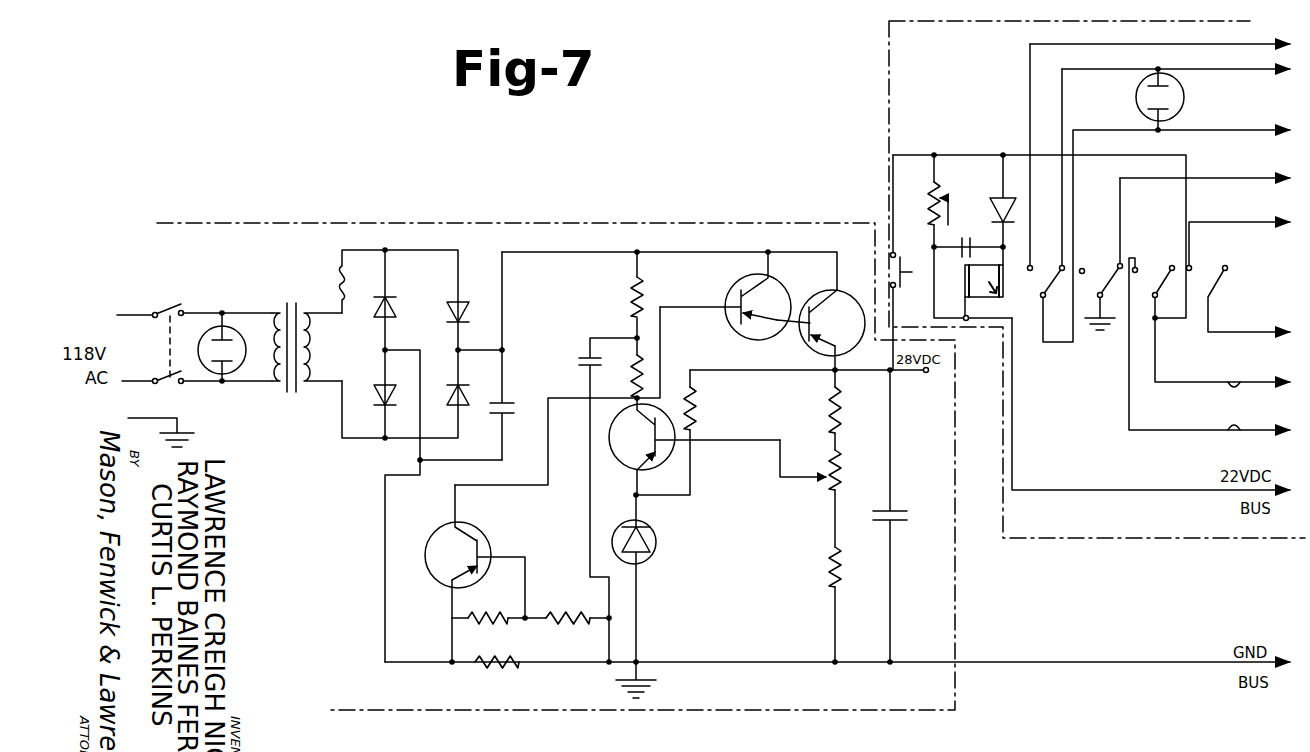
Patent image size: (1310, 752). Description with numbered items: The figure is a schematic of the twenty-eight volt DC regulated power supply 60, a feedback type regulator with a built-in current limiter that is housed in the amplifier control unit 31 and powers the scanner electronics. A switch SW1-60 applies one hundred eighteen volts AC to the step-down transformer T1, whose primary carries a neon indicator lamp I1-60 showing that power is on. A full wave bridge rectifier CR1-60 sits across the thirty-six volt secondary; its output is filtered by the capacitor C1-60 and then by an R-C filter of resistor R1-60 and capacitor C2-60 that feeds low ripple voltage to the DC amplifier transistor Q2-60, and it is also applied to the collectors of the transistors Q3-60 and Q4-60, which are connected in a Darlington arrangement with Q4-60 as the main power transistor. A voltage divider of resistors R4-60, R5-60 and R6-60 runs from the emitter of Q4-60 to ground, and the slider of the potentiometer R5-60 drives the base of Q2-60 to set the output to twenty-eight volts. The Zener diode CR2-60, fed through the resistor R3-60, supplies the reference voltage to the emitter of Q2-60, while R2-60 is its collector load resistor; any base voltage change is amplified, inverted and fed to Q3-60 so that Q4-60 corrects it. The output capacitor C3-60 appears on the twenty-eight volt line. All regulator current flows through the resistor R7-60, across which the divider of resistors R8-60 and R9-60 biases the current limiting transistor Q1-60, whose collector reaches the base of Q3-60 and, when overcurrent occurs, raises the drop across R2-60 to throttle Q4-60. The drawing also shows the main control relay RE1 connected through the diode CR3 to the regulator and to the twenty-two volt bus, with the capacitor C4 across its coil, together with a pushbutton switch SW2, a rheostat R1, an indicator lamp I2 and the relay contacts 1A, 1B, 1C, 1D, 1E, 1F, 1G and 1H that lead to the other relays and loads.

The regulated power supply 60 is at (592, 223).
The amplifier control unit 31 is at (887, 53).
The switch SW1-60 is at (176, 334).
The neon indicator lamp I1-60 is at (212, 347).
The transformer T1 is at (307, 339).
The full wave bridge rectifier CR1-60 is at (422, 246).
The capacitor C1-60 is at (516, 356).
The capacitor C2-60 is at (582, 496).
The resistor R1-60 is at (610, 303).
The collector load resistor R2-60 is at (644, 366).
The resistor R3-60 is at (690, 432).
The resistor R4-60 is at (808, 410).
The potentiometer R5-60 is at (825, 497).
The resistor R6-60 is at (820, 603).
The resistor R7-60 is at (489, 655).
The resistor R8-60 is at (490, 614).
The resistor R9-60 is at (568, 616).
The transistor Q1-60 is at (479, 551).
The DC amplifier transistor Q2-60 is at (709, 448).
The transistor Q3-60 is at (735, 296).
The main power transistor Q4-60 is at (813, 310).
The Zener diode CR2-60 is at (663, 578).
The output filter capacitor C3-60 is at (908, 516).
The pushbutton switch SW2 is at (910, 262).
The rheostat R1 is at (957, 236).
The capacitor C4 is at (970, 241).
The diode CR3 is at (990, 210).
The main control relay RE1 is at (988, 293).
The indicator lamp I2 is at (1145, 99).
The relay contact 1A is at (1166, 196).
The relay contact 1B is at (1152, 148).
The relay contact 1C is at (1187, 244).
The relay contact 1D is at (1084, 261).
The relay contact 1E is at (1223, 327).
The relay contact 1F is at (1212, 342).
The relay contact 1G is at (1248, 310).
The relay contact 1H is at (1239, 236).